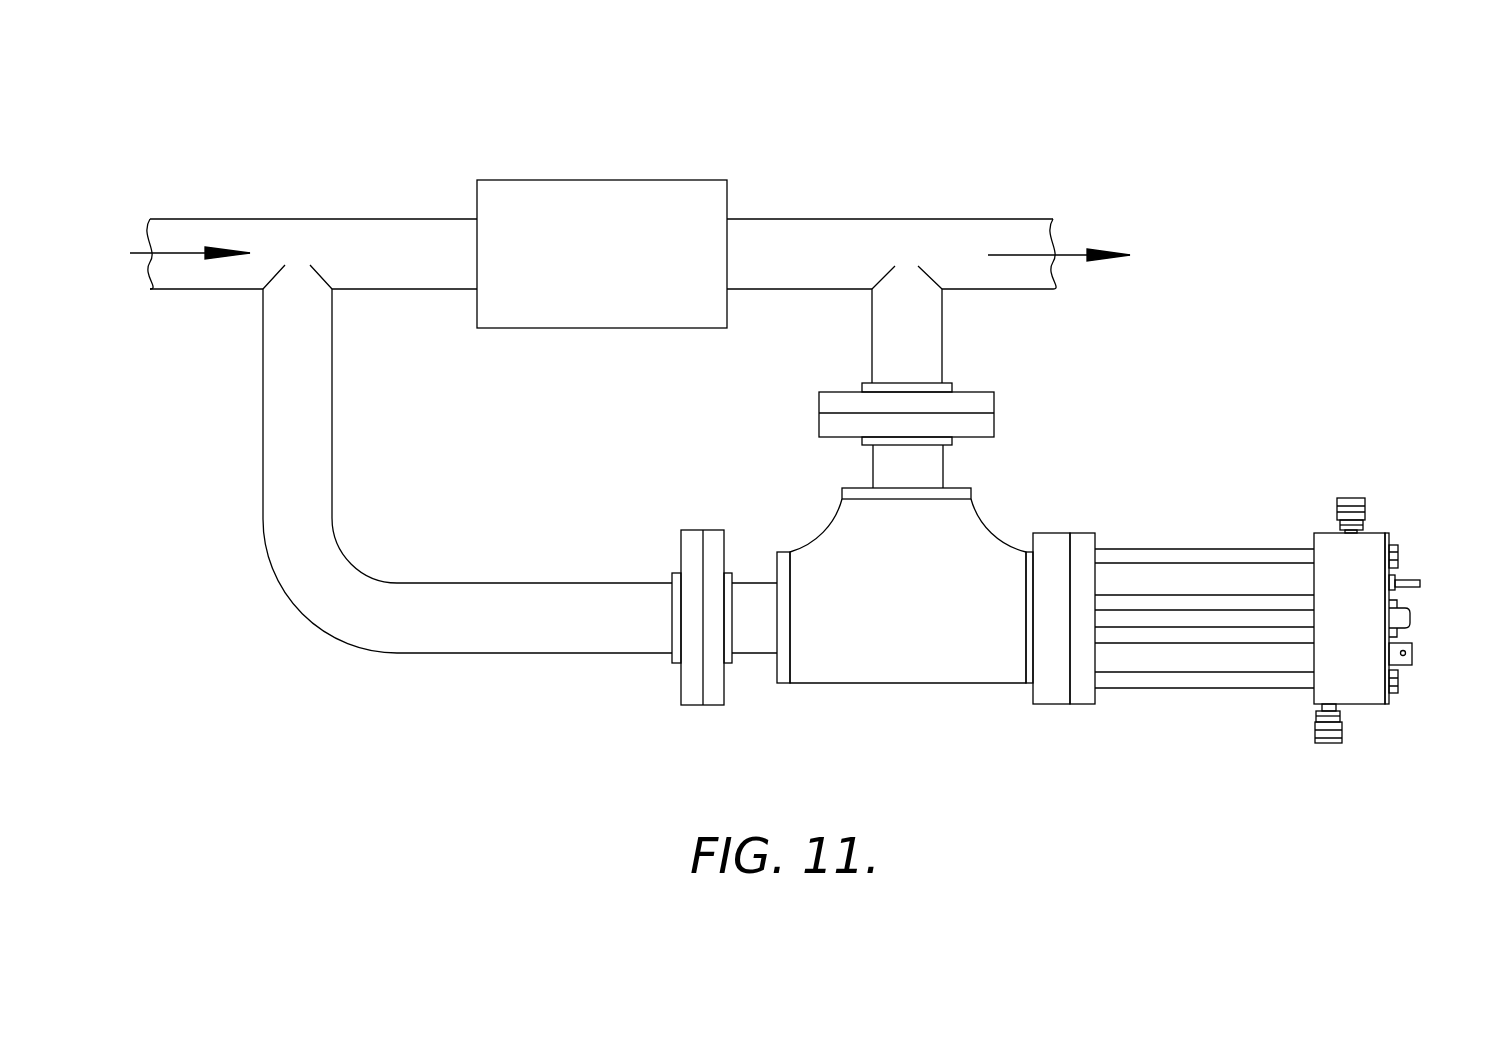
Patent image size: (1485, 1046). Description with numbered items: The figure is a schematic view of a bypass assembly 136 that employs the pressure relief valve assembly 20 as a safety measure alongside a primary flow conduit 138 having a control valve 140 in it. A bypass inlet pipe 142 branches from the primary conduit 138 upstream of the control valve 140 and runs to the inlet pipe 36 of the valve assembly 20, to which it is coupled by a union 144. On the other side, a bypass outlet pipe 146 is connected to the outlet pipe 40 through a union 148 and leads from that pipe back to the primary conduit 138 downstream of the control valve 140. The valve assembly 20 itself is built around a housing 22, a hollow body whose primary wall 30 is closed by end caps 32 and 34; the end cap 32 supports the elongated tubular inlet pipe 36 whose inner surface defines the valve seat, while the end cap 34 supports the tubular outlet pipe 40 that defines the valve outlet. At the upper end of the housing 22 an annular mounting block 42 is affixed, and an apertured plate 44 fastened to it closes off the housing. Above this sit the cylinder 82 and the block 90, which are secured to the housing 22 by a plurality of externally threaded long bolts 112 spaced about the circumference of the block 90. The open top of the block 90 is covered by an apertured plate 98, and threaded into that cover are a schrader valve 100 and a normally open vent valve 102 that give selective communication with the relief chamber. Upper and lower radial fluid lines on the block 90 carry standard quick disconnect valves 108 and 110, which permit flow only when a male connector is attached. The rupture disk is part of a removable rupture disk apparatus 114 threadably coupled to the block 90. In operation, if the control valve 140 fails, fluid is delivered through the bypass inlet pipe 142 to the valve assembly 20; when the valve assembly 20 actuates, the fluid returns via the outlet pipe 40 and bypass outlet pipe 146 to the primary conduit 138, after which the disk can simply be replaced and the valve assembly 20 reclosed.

The valve assembly 20 is at (1056, 618).
The housing 22 is at (898, 683).
The primary wall 30 is at (830, 552).
The end cap 32 is at (778, 672).
The end cap 34 is at (952, 493).
The inlet pipe 36 is at (755, 593).
The outlet pipe 40 is at (887, 457).
The mounting block 42 is at (1048, 695).
The apertured plate 44 is at (1082, 695).
The cylinder 82 is at (1190, 637).
The block 90 is at (1362, 706).
The apertured plate 98 is at (1388, 537).
The schrader valve 100 is at (1415, 583).
The vent valve 102 is at (1403, 665).
The quick disconnect valve 108 is at (1352, 497).
The quick disconnect valve 110 is at (1325, 743).
The bolts 112 is at (1245, 680).
The rupture disk apparatus 114 is at (1413, 620).
The bypass assembly 136 is at (939, 403).
The primary flow conduit 138 is at (790, 236).
The control valve 140 is at (507, 190).
The bypass inlet pipe 142 is at (367, 615).
The union 144 is at (716, 698).
The bypass outlet pipe 146 is at (888, 316).
The union 148 is at (990, 427).